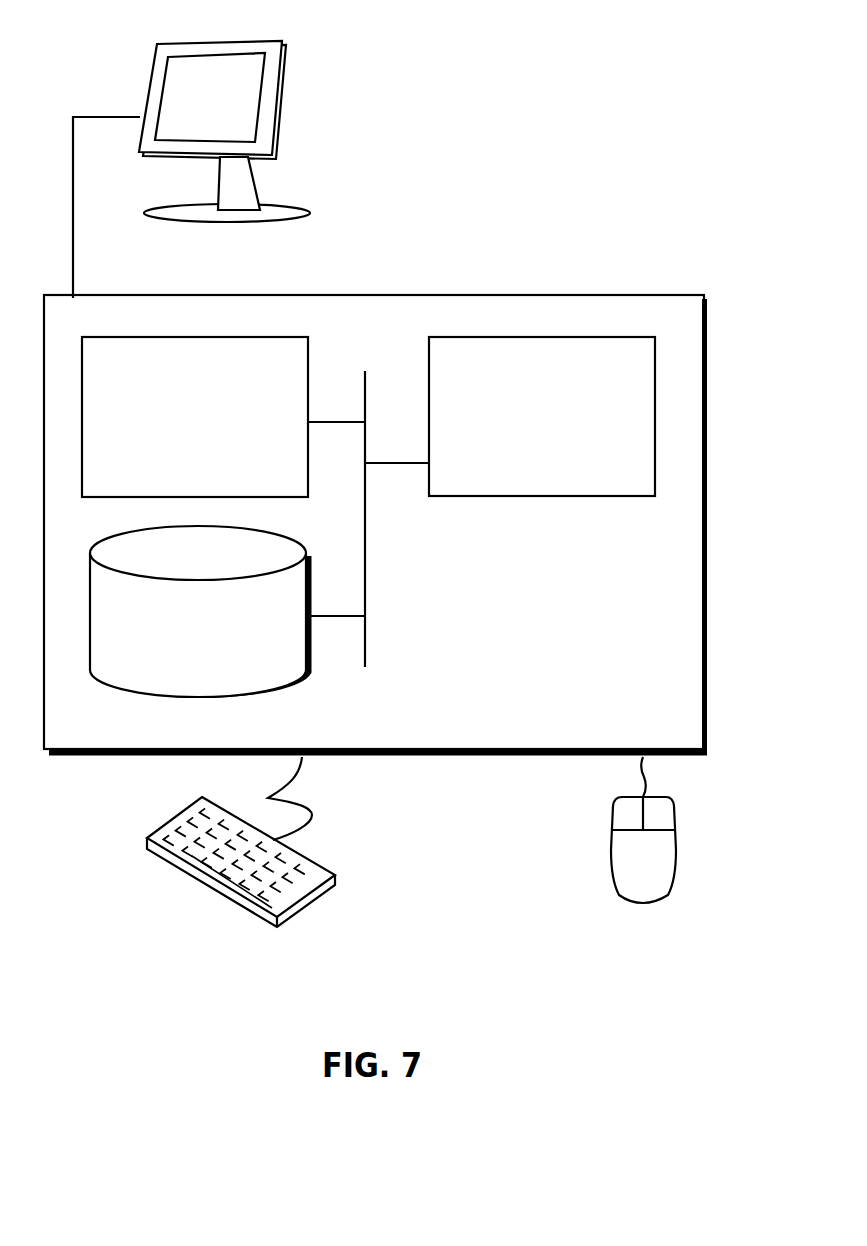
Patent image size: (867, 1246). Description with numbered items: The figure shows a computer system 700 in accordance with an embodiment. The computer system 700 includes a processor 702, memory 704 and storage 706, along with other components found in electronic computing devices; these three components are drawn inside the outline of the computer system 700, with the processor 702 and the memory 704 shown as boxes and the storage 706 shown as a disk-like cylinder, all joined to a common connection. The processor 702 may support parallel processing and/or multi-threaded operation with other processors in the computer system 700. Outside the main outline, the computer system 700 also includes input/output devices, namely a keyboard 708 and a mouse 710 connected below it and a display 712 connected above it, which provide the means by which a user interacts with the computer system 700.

The computer system 700 is at (419, 273).
The processor 702 is at (525, 432).
The memory 704 is at (175, 430).
The storage 706 is at (181, 642).
The keyboard 708 is at (163, 856).
The mouse 710 is at (623, 872).
The display 712 is at (191, 169).